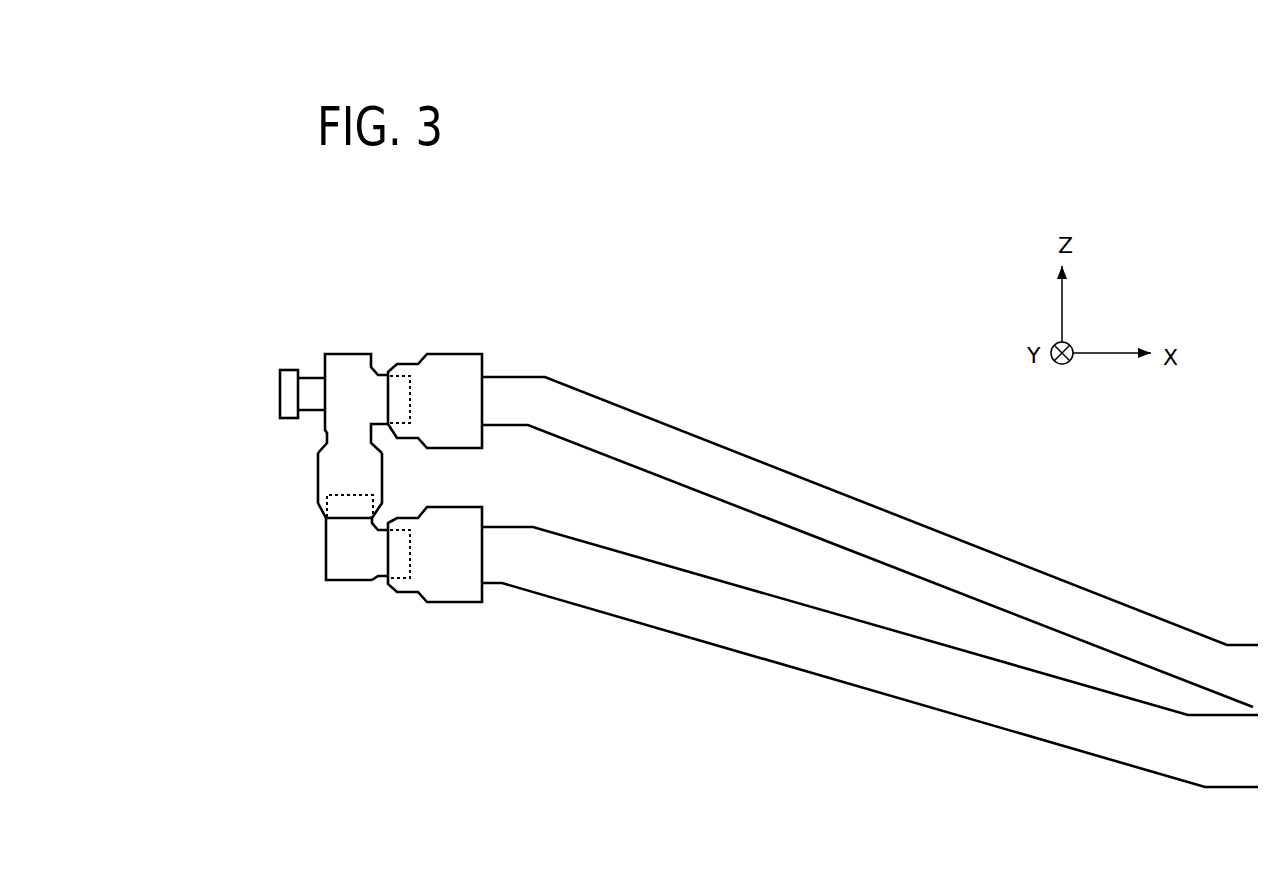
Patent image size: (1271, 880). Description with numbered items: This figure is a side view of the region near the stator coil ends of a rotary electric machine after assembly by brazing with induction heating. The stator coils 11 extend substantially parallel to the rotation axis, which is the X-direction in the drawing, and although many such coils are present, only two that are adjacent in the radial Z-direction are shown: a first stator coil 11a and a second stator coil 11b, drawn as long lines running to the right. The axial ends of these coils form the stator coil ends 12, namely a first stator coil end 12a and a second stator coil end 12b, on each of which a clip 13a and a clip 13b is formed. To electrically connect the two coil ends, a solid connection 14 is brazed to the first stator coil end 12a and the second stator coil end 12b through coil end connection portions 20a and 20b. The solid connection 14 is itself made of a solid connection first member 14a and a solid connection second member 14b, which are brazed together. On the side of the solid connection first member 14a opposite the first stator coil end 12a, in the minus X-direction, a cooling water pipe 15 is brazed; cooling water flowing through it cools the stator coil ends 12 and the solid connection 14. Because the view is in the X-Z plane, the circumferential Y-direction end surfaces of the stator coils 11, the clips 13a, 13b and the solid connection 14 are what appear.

The stator coils 11 is at (870, 582).
The first stator coil 11a is at (675, 445).
The second stator coil 11b is at (637, 612).
The stator coil ends 12 is at (410, 462).
The first stator coil end 12a is at (469, 370).
The second stator coil end 12b is at (455, 595).
The clip 13a is at (465, 372).
The clip 13b is at (450, 592).
The solid connection 14 is at (311, 451).
The solid connection first member 14a is at (338, 357).
The solid connection second member 14b is at (328, 585).
The cooling water pipe 15 is at (310, 403).
The coil end connection portion 20a is at (383, 356).
The coil end connection portion 20b is at (382, 590).